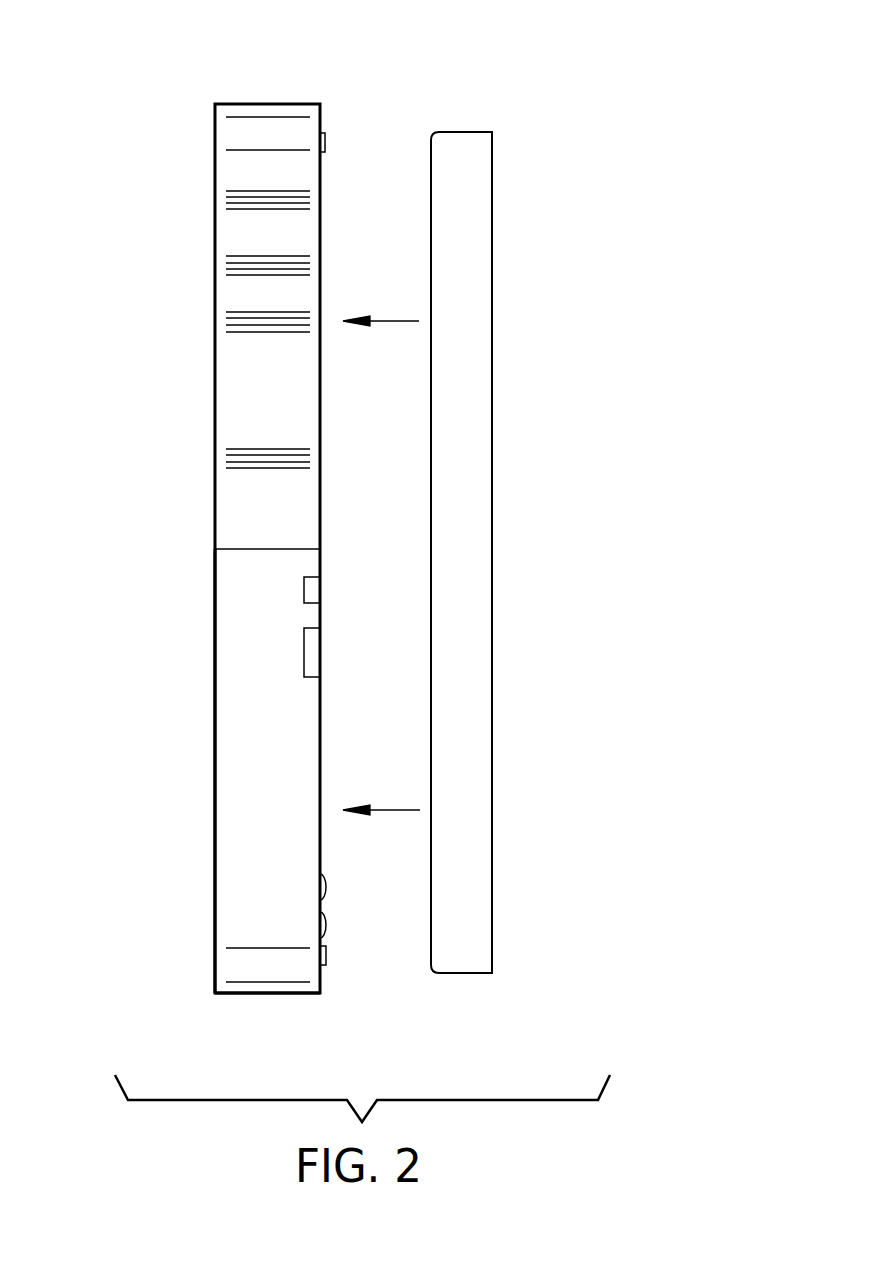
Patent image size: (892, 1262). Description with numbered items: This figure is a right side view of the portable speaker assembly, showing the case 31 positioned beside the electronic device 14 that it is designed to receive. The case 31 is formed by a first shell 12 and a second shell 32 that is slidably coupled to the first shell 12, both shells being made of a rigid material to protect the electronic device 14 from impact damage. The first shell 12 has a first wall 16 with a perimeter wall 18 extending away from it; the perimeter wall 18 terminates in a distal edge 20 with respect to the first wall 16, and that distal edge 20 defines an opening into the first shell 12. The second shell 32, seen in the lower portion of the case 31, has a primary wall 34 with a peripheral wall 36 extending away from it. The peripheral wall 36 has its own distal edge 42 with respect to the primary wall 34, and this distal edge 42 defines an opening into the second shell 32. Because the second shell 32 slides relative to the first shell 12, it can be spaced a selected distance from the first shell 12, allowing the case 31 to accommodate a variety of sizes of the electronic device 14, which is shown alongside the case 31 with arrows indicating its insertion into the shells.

The first shell 12 is at (320, 104).
The electronic device 14 is at (472, 132).
The first wall 16 is at (215, 160).
The perimeter wall 18 is at (262, 130).
The distal edge 20 is at (321, 201).
The case 31 is at (195, 410).
The second shell 32 is at (215, 993).
The primary wall 34 is at (215, 797).
The peripheral wall 36 is at (230, 709).
The distal edge 42 is at (321, 845).